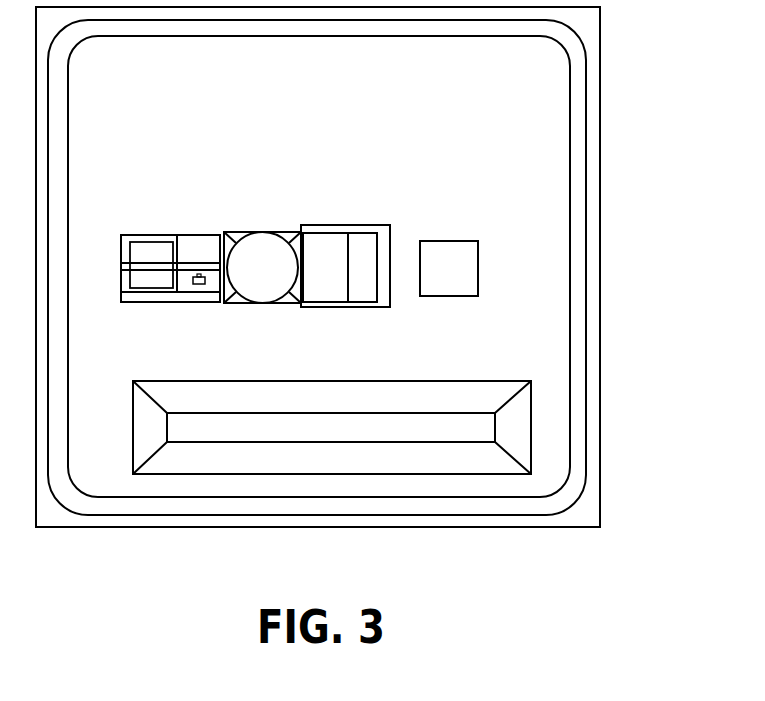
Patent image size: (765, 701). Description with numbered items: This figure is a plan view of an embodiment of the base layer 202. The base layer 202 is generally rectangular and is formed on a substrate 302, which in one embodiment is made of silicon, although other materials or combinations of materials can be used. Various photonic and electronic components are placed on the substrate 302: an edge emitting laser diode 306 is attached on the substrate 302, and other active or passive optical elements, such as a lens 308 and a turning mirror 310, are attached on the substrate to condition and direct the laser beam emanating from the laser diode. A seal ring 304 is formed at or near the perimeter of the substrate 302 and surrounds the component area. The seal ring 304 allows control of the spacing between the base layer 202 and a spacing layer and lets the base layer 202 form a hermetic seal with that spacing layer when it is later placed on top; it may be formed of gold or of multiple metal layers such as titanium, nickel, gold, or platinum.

The base layer 202 is at (371, 286).
The substrate 302 is at (589, 505).
The seal ring 304 is at (577, 264).
The edge emitting laser diode 306 is at (156, 252).
The lens 308 is at (262, 252).
The turning mirror 310 is at (364, 253).